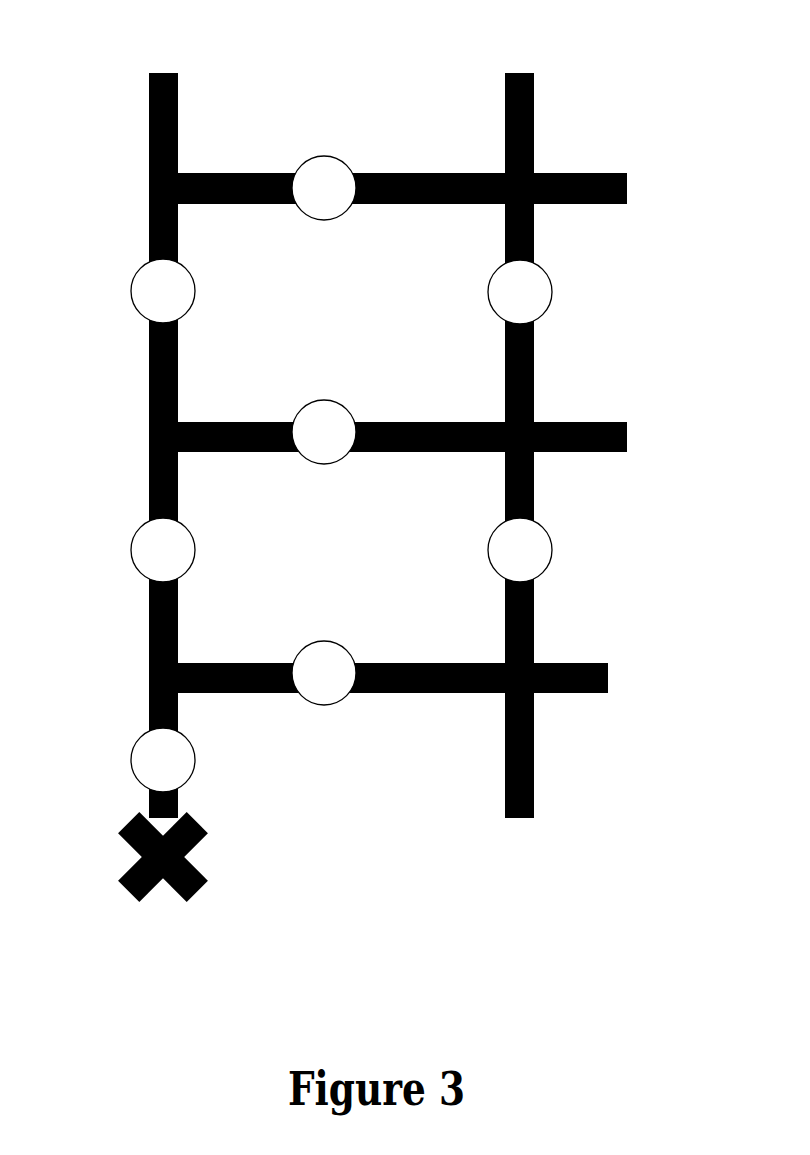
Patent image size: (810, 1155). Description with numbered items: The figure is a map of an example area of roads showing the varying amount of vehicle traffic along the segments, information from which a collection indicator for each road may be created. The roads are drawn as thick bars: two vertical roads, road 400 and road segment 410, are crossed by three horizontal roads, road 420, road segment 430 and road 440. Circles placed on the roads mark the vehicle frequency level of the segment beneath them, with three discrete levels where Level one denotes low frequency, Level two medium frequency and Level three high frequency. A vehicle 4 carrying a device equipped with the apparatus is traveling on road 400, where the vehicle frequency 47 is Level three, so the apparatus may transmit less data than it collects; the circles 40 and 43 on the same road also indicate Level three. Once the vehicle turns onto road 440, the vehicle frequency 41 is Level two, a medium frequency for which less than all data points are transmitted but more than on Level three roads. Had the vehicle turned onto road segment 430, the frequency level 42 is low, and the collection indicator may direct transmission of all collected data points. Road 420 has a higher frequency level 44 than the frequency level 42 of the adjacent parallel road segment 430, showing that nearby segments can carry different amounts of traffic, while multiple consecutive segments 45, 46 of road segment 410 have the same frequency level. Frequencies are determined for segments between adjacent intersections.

The road 400 is at (213, 409).
The road segment 410 is at (577, 415).
The road 420 is at (447, 160).
The road segment 430 is at (447, 408).
The road 440 is at (438, 648).
The vehicle 4 is at (210, 819).
The circle 40 is at (215, 530).
The vehicle frequency 41 is at (360, 638).
The frequency level 42 is at (372, 400).
The circle 43 is at (215, 280).
The frequency level 44 is at (360, 151).
The segment 45 is at (571, 271).
The segment 46 is at (571, 530).
The vehicle frequency 47 is at (118, 759).